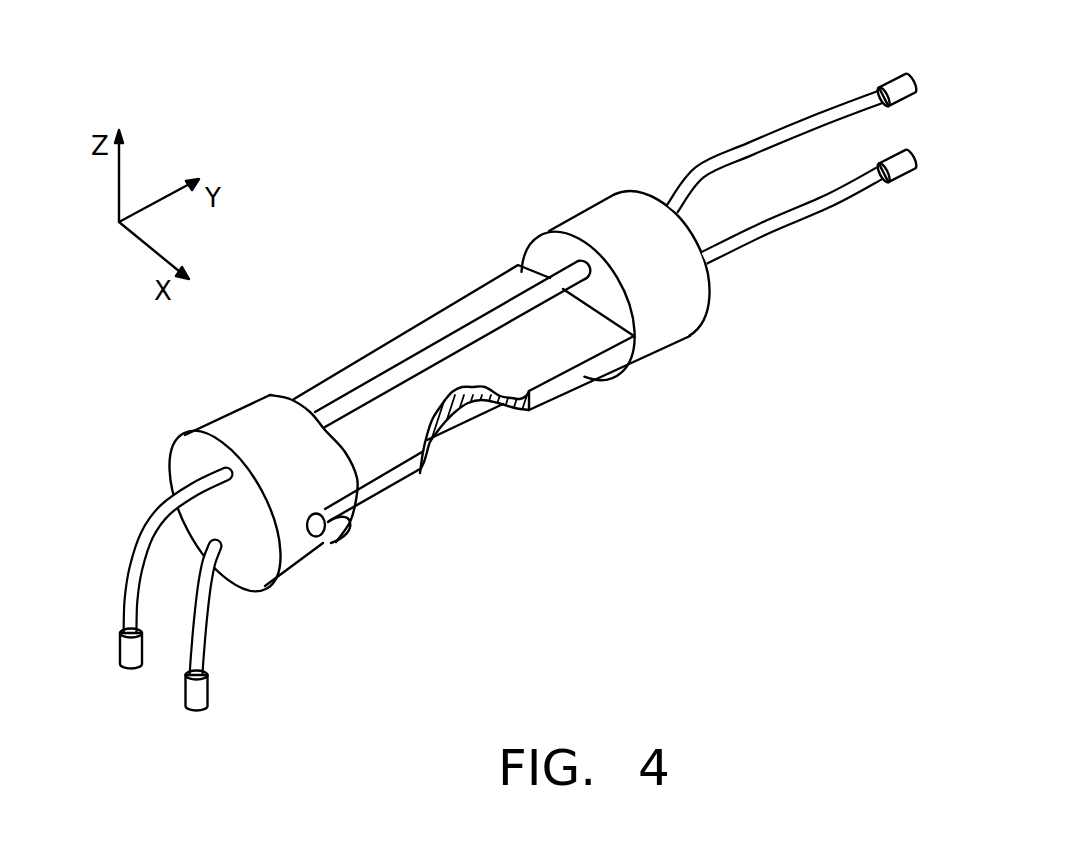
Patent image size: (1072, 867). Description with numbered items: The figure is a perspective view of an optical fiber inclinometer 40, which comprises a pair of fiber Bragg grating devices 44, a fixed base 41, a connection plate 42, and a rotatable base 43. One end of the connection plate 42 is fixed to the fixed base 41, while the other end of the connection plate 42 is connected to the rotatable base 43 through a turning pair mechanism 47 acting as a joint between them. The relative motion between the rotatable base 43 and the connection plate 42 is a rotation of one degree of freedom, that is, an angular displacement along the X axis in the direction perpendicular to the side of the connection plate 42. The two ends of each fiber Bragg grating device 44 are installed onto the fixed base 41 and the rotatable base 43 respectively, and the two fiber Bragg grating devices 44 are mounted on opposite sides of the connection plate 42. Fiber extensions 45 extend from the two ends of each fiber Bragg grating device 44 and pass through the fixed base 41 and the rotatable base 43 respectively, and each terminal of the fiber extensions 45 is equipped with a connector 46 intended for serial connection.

The optical fiber inclinometer 40 is at (512, 180).
The fixed base 41 is at (628, 213).
The connection plate 42 is at (440, 327).
The rotatable base 43 is at (246, 420).
The fiber Bragg grating device 44 is at (365, 393).
The fiber extension 45 is at (153, 551).
The connector 46 is at (127, 669).
The turning pair mechanism 47 is at (320, 542).